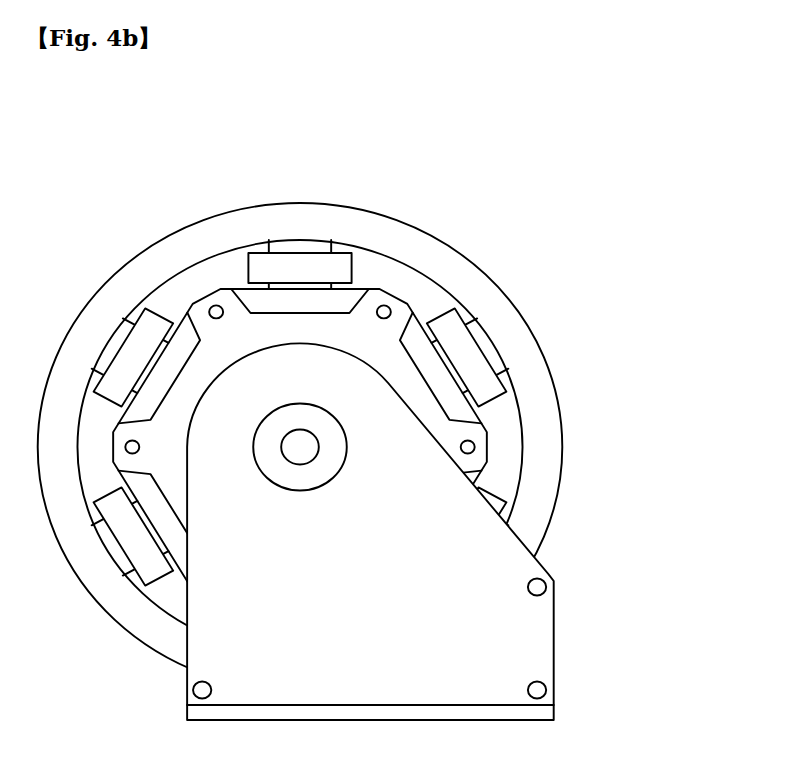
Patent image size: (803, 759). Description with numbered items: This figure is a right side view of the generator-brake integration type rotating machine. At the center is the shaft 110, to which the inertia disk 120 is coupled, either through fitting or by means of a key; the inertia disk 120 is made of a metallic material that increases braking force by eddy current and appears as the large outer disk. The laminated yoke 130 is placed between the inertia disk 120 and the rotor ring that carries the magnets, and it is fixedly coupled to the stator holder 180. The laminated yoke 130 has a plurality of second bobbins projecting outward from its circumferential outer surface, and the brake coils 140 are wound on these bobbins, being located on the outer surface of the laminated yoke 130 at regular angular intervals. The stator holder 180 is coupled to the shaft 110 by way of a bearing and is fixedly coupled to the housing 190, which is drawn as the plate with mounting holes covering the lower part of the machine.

The shaft 110 is at (300, 447).
The inertia disk 120 is at (425, 250).
The laminated yoke 130 is at (410, 338).
The brake coils 140 is at (473, 368).
The stator holder 180 is at (443, 418).
The housing 190 is at (513, 652).